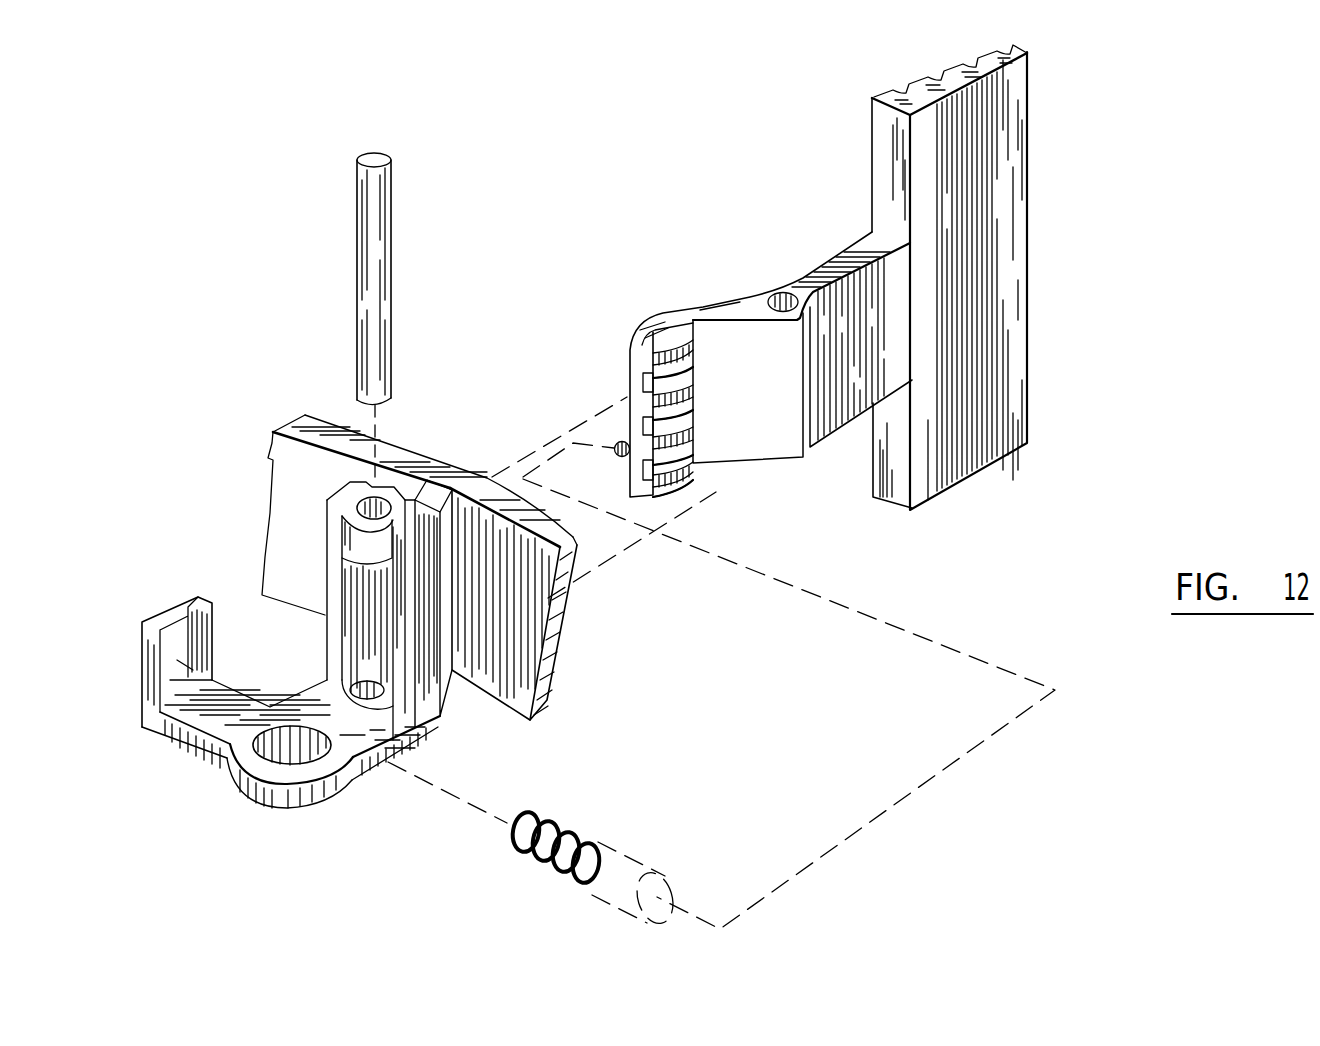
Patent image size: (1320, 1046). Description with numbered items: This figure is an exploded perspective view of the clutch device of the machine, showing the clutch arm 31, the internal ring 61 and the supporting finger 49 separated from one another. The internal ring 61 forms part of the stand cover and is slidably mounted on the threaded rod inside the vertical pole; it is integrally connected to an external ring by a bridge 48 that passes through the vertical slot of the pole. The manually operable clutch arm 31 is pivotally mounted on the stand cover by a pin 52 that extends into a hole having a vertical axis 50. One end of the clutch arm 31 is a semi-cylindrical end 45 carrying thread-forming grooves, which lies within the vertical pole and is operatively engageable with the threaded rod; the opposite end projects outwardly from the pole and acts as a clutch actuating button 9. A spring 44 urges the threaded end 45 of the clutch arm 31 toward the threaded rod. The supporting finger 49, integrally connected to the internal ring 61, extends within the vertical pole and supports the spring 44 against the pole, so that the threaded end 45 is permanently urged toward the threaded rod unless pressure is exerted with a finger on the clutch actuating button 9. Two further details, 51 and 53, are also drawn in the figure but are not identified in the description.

The clutch actuating button 9 is at (880, 100).
The clutch arm 31 is at (771, 339).
The spring 44 is at (533, 856).
The semi-cylindrical end 45 is at (684, 420).
The bridge 48 is at (438, 718).
The supporting finger 49 is at (180, 623).
The hole having a vertical axis 50 is at (380, 500).
The pin hole 51 is at (783, 292).
The pin 52 is at (393, 190).
The detent ball 53 is at (616, 446).
The internal ring 61 is at (330, 773).